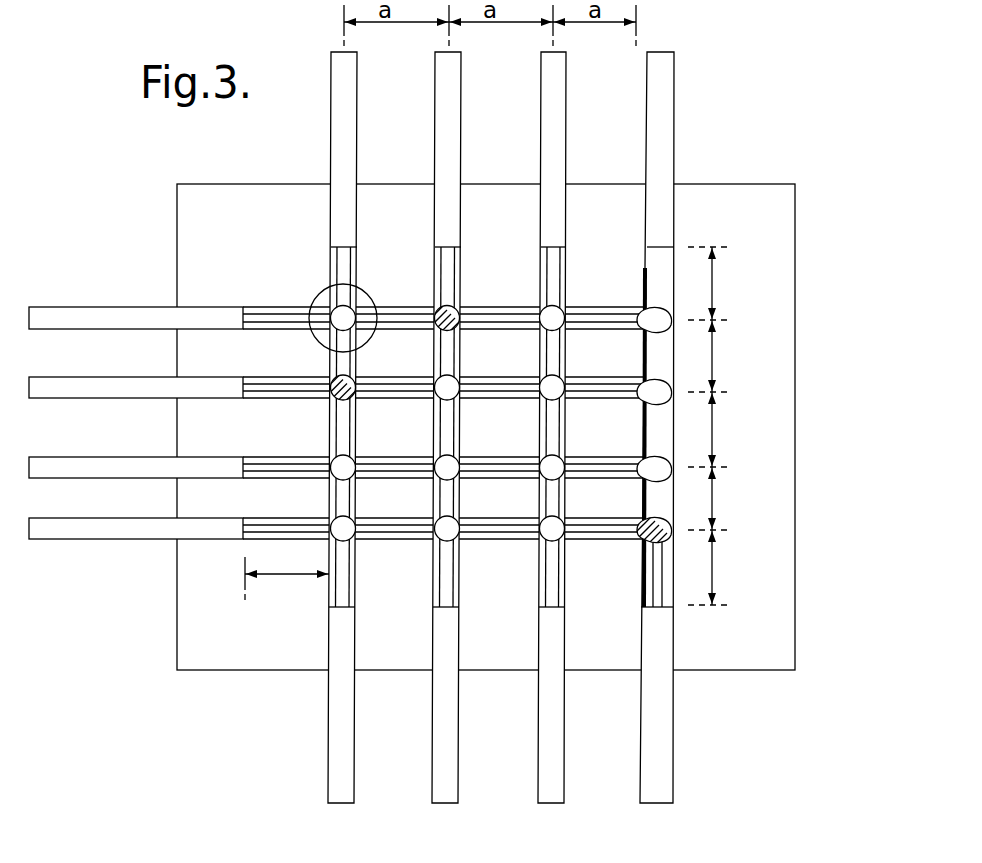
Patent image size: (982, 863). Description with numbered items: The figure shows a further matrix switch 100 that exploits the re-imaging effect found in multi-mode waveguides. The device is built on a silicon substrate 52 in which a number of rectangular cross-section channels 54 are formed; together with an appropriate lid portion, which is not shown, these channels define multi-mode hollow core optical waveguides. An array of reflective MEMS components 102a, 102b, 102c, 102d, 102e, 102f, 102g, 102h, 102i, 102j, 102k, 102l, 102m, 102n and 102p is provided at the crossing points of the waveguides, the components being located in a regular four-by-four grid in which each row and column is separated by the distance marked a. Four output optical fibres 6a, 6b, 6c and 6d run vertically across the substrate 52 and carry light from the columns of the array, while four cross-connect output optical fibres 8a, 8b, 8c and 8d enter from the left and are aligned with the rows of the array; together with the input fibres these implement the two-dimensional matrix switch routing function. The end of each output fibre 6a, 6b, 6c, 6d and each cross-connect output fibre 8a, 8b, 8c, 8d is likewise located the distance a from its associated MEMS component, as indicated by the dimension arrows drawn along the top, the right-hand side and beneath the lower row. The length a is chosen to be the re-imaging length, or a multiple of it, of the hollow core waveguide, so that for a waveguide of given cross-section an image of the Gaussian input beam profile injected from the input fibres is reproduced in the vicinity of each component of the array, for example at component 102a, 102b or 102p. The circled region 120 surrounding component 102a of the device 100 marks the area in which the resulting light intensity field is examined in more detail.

The output optical fibre 6a is at (351, 85).
The output optical fibre 6b is at (455, 84).
The output optical fibre 6c is at (558, 93).
The output optical fibre 6d is at (668, 80).
The cross-connect output optical fibre 8a is at (73, 524).
The cross-connect output optical fibre 8b is at (69, 462).
The cross-connect output optical fibre 8c is at (69, 382).
The cross-connect output optical fibre 8d is at (58, 310).
The silicon substrate 52 is at (767, 566).
The rectangular cross-section channel 54 is at (663, 259).
The matrix switch 100 is at (444, 427).
The reflective MEMS component 102a is at (333, 323).
The reflective MEMS component 102b is at (453, 312).
The reflective MEMS component 102c is at (558, 323).
The reflective MEMS component 102d is at (664, 316).
The reflective MEMS component 102e is at (331, 395).
The reflective MEMS component 102f is at (450, 390).
The reflective MEMS component 102g is at (555, 390).
The reflective MEMS component 102h is at (664, 387).
The reflective MEMS component 102i is at (340, 463).
The reflective MEMS component 102j is at (450, 469).
The reflective MEMS component 102k is at (555, 469).
The reflective MEMS component 102l is at (664, 464).
The reflective MEMS component 102m is at (340, 524).
The reflective MEMS component 102n is at (556, 530).
The reflective MEMS component 102p is at (673, 517).
The region 120 is at (311, 295).